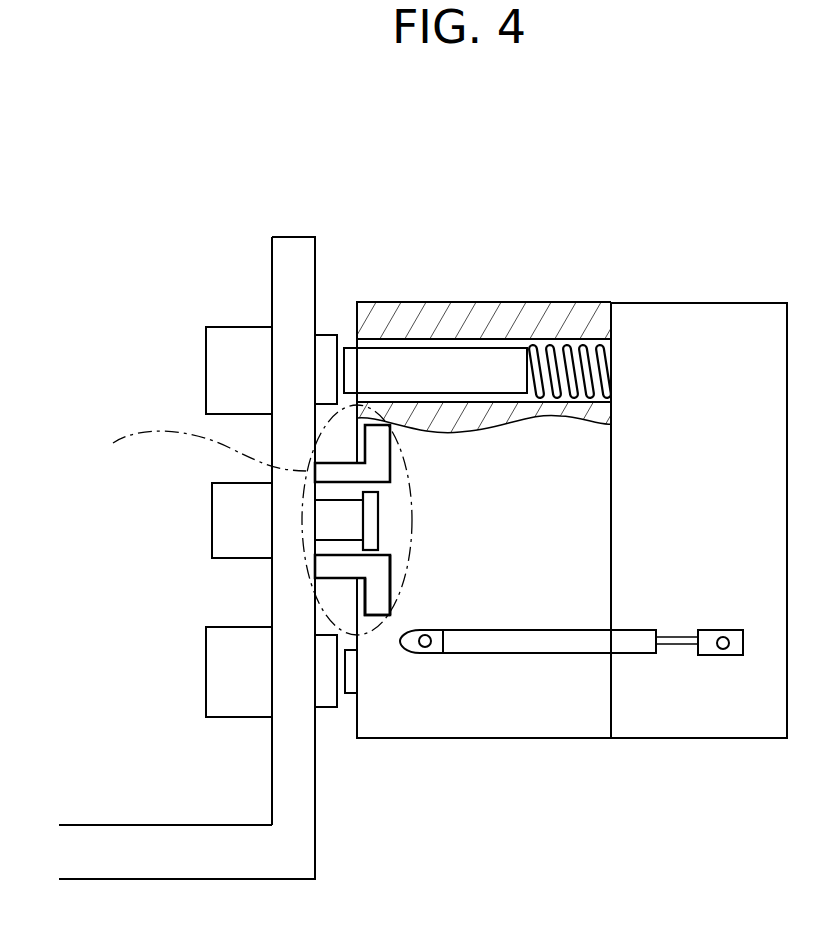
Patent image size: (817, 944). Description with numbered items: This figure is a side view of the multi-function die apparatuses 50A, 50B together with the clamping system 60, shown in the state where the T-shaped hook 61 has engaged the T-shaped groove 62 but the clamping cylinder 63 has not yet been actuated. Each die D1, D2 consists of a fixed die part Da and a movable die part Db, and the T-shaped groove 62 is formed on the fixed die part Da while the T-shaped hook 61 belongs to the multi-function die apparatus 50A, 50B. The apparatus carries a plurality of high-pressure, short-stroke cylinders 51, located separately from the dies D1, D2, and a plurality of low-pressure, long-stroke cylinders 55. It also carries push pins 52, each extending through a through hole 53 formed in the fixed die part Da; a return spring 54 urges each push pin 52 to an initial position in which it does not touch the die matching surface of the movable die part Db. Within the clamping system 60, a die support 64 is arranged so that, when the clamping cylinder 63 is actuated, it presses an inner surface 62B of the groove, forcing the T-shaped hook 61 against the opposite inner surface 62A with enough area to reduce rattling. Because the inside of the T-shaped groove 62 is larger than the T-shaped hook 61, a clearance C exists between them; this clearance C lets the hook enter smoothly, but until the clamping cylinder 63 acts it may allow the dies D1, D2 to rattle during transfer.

The multi-function die apparatus 50A is at (288, 170).
The multi-function die apparatus 50B is at (187, 485).
The high-pressure cylinder 51 is at (215, 377).
The push pin 52 is at (397, 370).
The through hole 53 is at (466, 348).
The return spring 54 is at (548, 355).
The low-pressure cylinder 55 is at (523, 653).
The clamping system 60 is at (243, 520).
The T-shaped hook 61 is at (377, 453).
The T-shaped groove 62 is at (385, 535).
The opposite inner surface of T-shaped groove 62A is at (390, 592).
The inner surface of T-shaped groove 62B is at (390, 590).
The clamping cylinder 63 is at (218, 520).
The die support 64 is at (372, 510).
The clearance C is at (317, 585).
The die D1 is at (645, 205).
The die D2 is at (572, 441).
The fixed die part Da is at (590, 302).
The movable die part Db is at (735, 312).